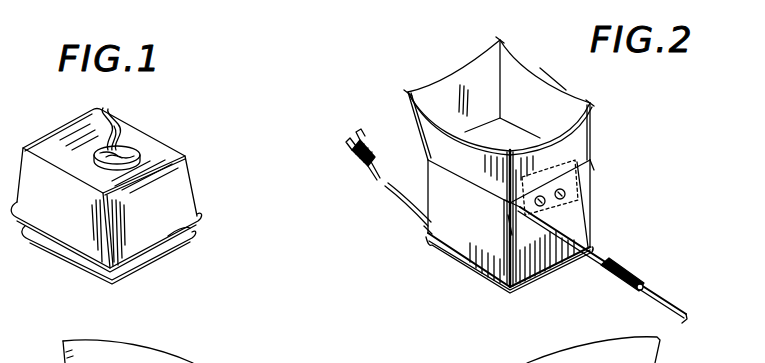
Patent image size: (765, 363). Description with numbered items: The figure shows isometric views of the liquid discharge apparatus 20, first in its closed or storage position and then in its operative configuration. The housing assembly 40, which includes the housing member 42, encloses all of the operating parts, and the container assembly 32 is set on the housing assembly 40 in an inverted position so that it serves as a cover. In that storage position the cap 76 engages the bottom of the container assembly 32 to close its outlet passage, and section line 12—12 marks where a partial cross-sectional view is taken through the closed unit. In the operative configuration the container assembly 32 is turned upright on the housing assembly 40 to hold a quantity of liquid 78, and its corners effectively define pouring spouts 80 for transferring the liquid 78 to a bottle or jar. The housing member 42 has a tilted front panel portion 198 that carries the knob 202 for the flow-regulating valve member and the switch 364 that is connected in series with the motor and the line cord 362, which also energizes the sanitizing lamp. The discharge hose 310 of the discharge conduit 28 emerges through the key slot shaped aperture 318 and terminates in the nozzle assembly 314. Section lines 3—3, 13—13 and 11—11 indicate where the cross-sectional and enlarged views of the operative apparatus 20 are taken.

In FIG. 1, the liquid discharge apparatus 20 is at (186, 254).
In FIG. 2, the liquid discharge apparatus 20 is at (473, 276).
In FIG. 1, the container assembly 32 is at (202, 207).
In FIG. 2, the container assembly 32 is at (599, 124).
In FIG. 1, the housing member 42 is at (204, 218).
In FIG. 2, the housing member 42 is at (504, 290).
In FIG. 1, the cap 76 is at (125, 149).
In FIG. 1, the section line 12— 12 is at (171, 129).
In FIG. 2, the section line 3— 3 is at (409, 44).
In FIG. 2, the liquid 78 is at (488, 80).
In FIG. 2, the pouring spouts 80 is at (408, 92).
In FIG. 2, the switch 364 is at (594, 172).
In FIG. 2, the knob 202 is at (582, 208).
In FIG. 2, the discharge hose 310 is at (592, 222).
In FIG. 2, the section line 13— 13 is at (484, 173).
In FIG. 2, the key slot shaped aperture 318 is at (508, 218).
In FIG. 2, the tilted front panel portion 198 is at (508, 230).
In FIG. 2, the line cord 362 is at (388, 194).
In FIG. 2, the housing assembly 40 is at (424, 231).
In FIG. 2, the discharge conduit 28 is at (589, 266).
In FIG. 2, the nozzle assembly 314 is at (636, 279).
In FIG. 2, the section line 11— 11 is at (747, 314).